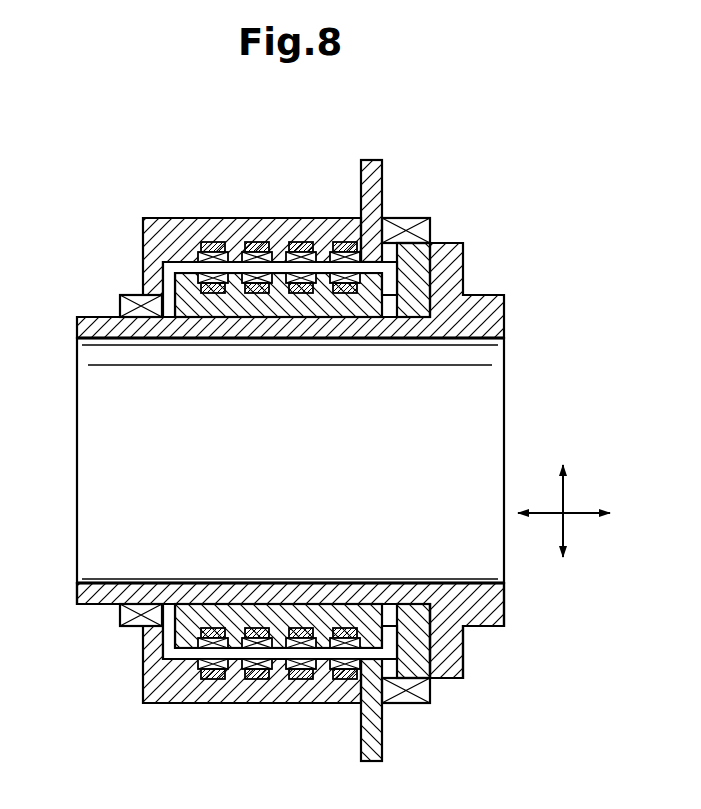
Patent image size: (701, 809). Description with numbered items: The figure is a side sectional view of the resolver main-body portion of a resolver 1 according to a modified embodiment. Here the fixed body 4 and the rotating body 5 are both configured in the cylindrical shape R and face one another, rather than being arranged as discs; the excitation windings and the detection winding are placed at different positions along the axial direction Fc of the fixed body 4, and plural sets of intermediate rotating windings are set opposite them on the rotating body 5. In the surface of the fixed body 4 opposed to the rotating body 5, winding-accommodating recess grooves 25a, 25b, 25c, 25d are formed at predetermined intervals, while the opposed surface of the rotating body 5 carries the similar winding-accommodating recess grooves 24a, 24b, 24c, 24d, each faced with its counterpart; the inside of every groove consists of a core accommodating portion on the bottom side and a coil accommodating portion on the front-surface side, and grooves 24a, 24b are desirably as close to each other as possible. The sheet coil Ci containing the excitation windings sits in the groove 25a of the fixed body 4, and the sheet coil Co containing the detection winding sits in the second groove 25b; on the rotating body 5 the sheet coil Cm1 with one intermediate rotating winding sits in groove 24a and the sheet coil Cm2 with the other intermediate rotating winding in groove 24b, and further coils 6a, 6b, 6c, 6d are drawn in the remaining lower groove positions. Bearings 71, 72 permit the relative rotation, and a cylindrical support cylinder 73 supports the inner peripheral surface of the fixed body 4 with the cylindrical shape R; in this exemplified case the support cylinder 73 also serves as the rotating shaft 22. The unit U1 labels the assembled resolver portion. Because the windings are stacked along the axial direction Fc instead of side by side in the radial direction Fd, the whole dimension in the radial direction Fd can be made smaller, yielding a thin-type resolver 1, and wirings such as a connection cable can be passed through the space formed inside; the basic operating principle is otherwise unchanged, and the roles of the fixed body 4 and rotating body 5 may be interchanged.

The resolver 1 is at (474, 182).
The fixed body 4 is at (176, 212).
The rotating body 5 is at (197, 324).
The coil 6a is at (330, 703).
The coil 6b is at (287, 703).
The coil 6c is at (242, 703).
The coil 6d is at (197, 703).
The rotating shaft 22 is at (347, 540).
The winding-accommodating recess groove 24a is at (366, 632).
The winding-accommodating recess groove 24b is at (308, 630).
The winding-accommodating recess groove 24c is at (258, 630).
The winding-accommodating recess groove 24d is at (213, 630).
The winding-accommodating recess groove 25a is at (353, 245).
The winding-accommodating recess groove 25b is at (312, 245).
The winding-accommodating recess groove 25c is at (257, 245).
The winding-accommodating recess groove 25d is at (212, 244).
The bearing 71 is at (125, 295).
The bearing 72 is at (406, 218).
The support cylinder 73 is at (505, 400).
The unit U1 is at (496, 262).
The cylindrical shape R is at (120, 668).
The sheet coil Co is at (279, 264).
The sheet coil Cm1 is at (368, 292).
The sheet coil Cm2 is at (318, 292).
The sheet coil Ci is at (397, 285).
The axial direction Fc is at (578, 514).
The radial direction Fd is at (562, 525).